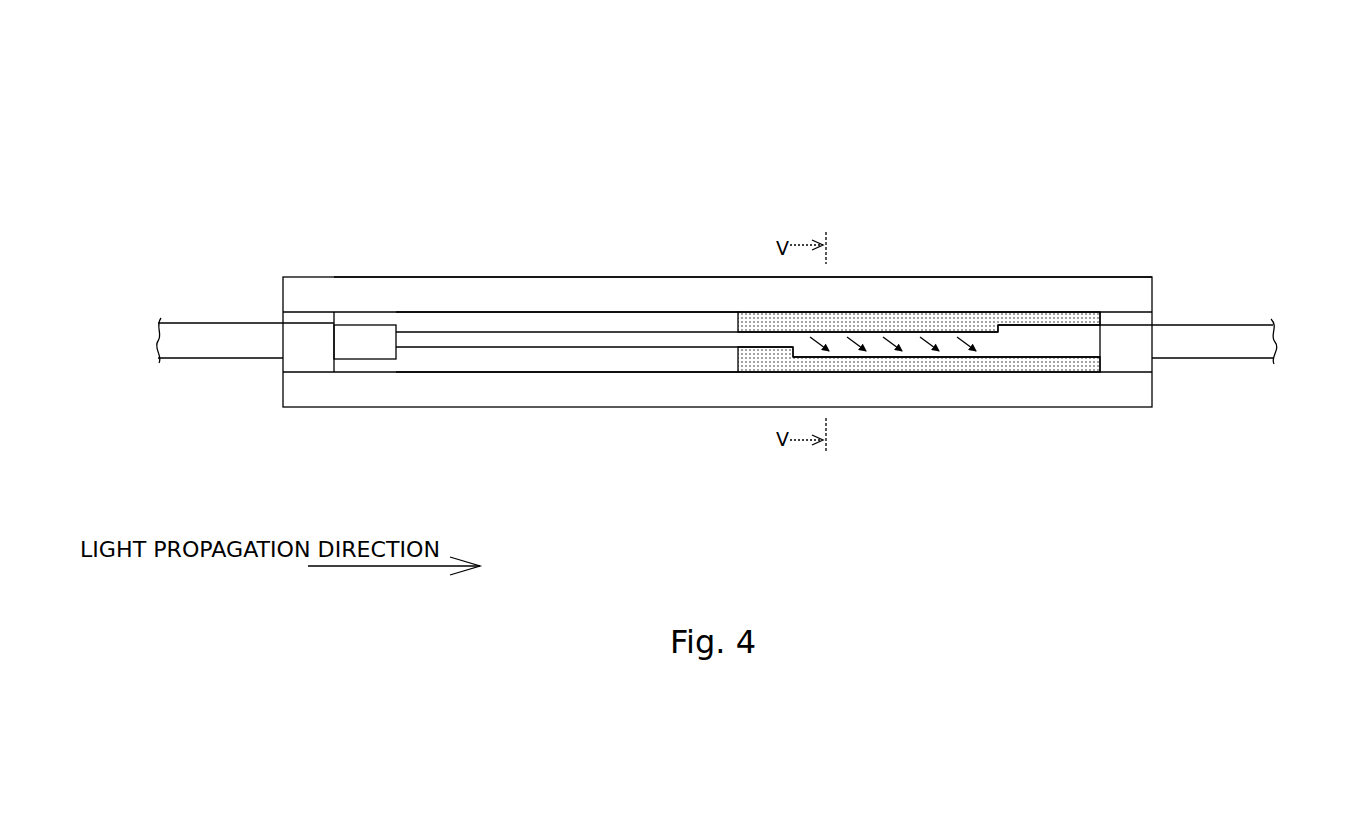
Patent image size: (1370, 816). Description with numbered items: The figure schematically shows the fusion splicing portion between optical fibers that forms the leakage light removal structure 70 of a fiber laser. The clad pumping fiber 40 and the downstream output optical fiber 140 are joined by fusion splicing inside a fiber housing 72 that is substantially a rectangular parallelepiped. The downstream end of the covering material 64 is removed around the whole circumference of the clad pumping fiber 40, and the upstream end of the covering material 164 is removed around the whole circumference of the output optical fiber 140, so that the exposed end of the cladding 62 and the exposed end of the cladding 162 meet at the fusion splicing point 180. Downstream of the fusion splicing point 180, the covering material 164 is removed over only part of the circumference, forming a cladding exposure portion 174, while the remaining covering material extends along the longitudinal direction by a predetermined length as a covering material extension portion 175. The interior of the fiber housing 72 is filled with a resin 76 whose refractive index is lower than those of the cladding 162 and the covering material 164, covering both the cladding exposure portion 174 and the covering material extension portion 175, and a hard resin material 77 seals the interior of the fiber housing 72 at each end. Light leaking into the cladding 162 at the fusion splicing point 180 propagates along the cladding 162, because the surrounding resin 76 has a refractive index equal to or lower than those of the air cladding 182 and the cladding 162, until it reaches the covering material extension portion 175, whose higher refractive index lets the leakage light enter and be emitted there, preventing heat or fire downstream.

The clad pumping fiber 40 is at (202, 302).
The output optical fiber 140 is at (1234, 303).
The leakage light removal structure 70 is at (1236, 148).
The fiber housing 72 is at (1078, 246).
The hard resin material 77 is at (312, 362).
The covering material 64 is at (368, 347).
The cladding 62 is at (485, 338).
The cladding 162 is at (678, 340).
The air cladding 182 is at (555, 316).
The fusion splicing point 180 is at (605, 332).
The cladding exposure portion 174 is at (872, 327).
The resin 76 is at (948, 370).
The covering material extension portion 175 is at (883, 357).
The covering material 164 is at (1040, 347).